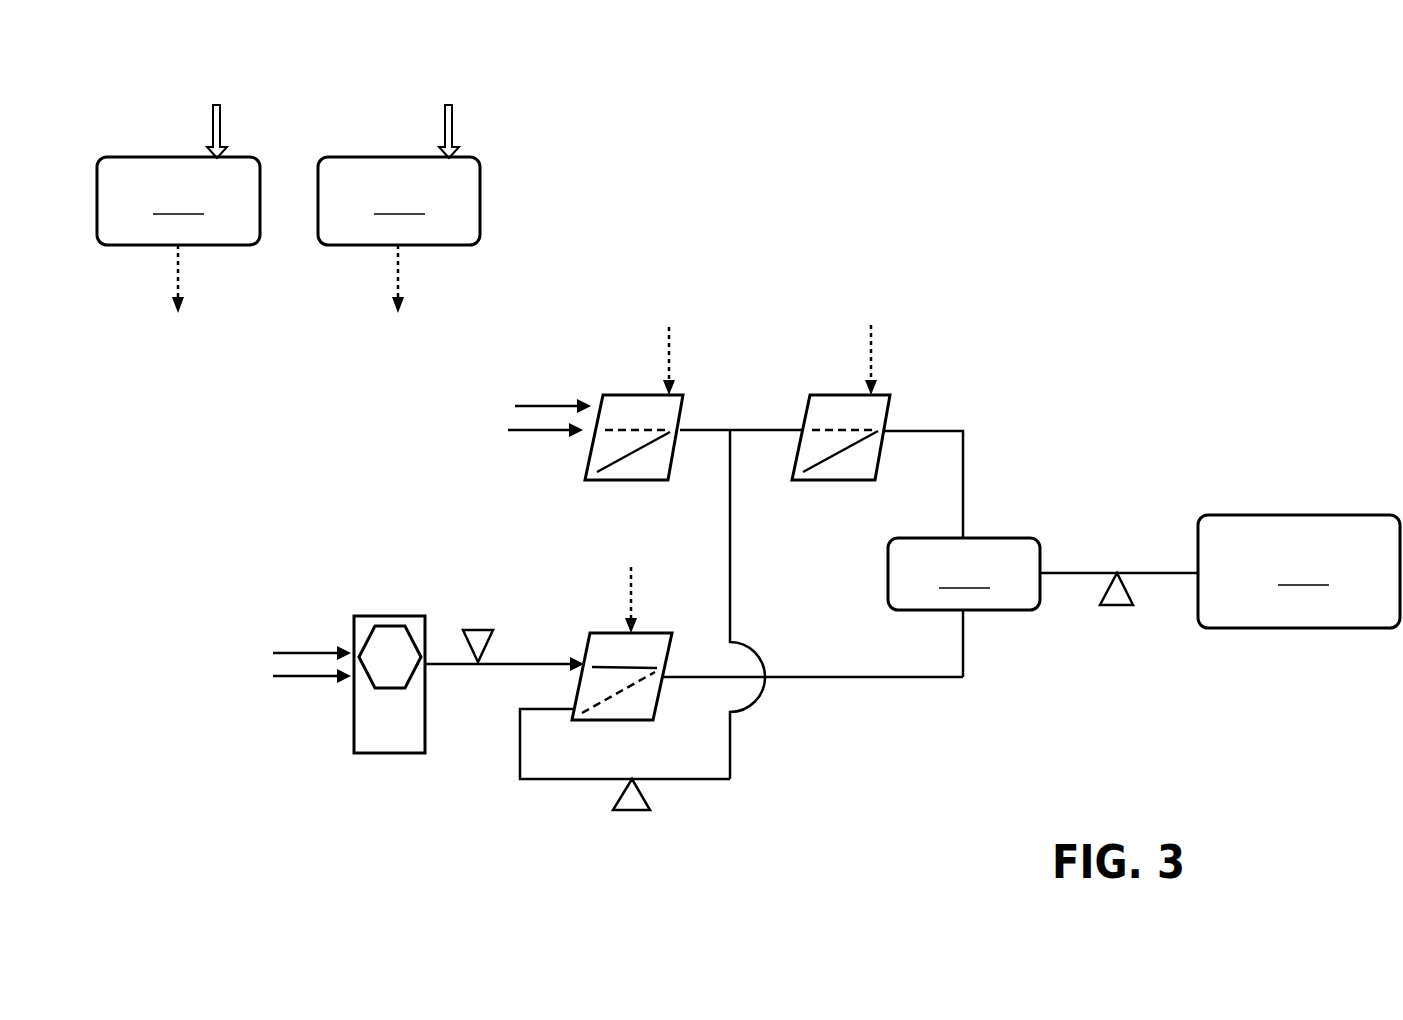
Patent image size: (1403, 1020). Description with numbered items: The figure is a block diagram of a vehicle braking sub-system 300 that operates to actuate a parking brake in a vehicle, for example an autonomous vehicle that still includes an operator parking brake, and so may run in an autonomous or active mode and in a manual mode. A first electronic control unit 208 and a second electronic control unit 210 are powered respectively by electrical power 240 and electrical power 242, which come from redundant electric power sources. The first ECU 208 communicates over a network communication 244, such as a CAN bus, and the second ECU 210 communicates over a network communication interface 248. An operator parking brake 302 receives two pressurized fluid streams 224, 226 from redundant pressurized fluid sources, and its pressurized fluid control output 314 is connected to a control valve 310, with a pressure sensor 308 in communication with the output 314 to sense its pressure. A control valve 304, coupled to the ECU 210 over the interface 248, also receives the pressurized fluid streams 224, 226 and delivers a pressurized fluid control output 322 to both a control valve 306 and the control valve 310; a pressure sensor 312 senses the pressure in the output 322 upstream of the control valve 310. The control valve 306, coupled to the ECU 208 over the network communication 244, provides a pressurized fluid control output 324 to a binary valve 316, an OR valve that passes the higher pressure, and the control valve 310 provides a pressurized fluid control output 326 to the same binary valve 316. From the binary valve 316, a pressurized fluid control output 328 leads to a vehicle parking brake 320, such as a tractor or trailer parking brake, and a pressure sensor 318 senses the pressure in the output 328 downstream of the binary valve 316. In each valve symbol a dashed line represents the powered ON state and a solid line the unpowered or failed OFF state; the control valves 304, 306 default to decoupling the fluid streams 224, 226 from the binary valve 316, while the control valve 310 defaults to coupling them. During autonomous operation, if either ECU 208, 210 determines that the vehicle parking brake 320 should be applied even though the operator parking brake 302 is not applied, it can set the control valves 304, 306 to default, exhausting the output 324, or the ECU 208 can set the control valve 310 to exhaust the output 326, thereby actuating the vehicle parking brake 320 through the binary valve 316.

The vehicle braking sub-system 300 is at (812, 180).
The first electronic control unit 208 is at (178, 201).
The second electronic control unit 210 is at (399, 201).
The electrical power 240 is at (222, 127).
The electrical power 242 is at (455, 127).
The network communication 244 is at (180, 277).
The network communication interface 248 is at (400, 277).
The pressurized fluid stream 224 is at (528, 430).
The pressurized fluid stream 226 is at (555, 403).
The operator parking brake 302 is at (397, 615).
The control valve 304 is at (632, 393).
The control valve 306 is at (835, 392).
The pressure sensor 308 is at (483, 630).
The control valve 310 is at (597, 632).
The pressure sensor 312 is at (628, 813).
The pressurized fluid control output 314 is at (443, 665).
The binary valve 316 is at (964, 574).
The pressure sensor 318 is at (1112, 603).
The vehicle parking brake 320 is at (1299, 571).
The pressurized fluid control output 322 is at (732, 563).
The pressurized fluid control output 324 is at (964, 478).
The pressurized fluid control output 326 is at (843, 677).
The pressurized fluid control output 328 is at (1080, 572).